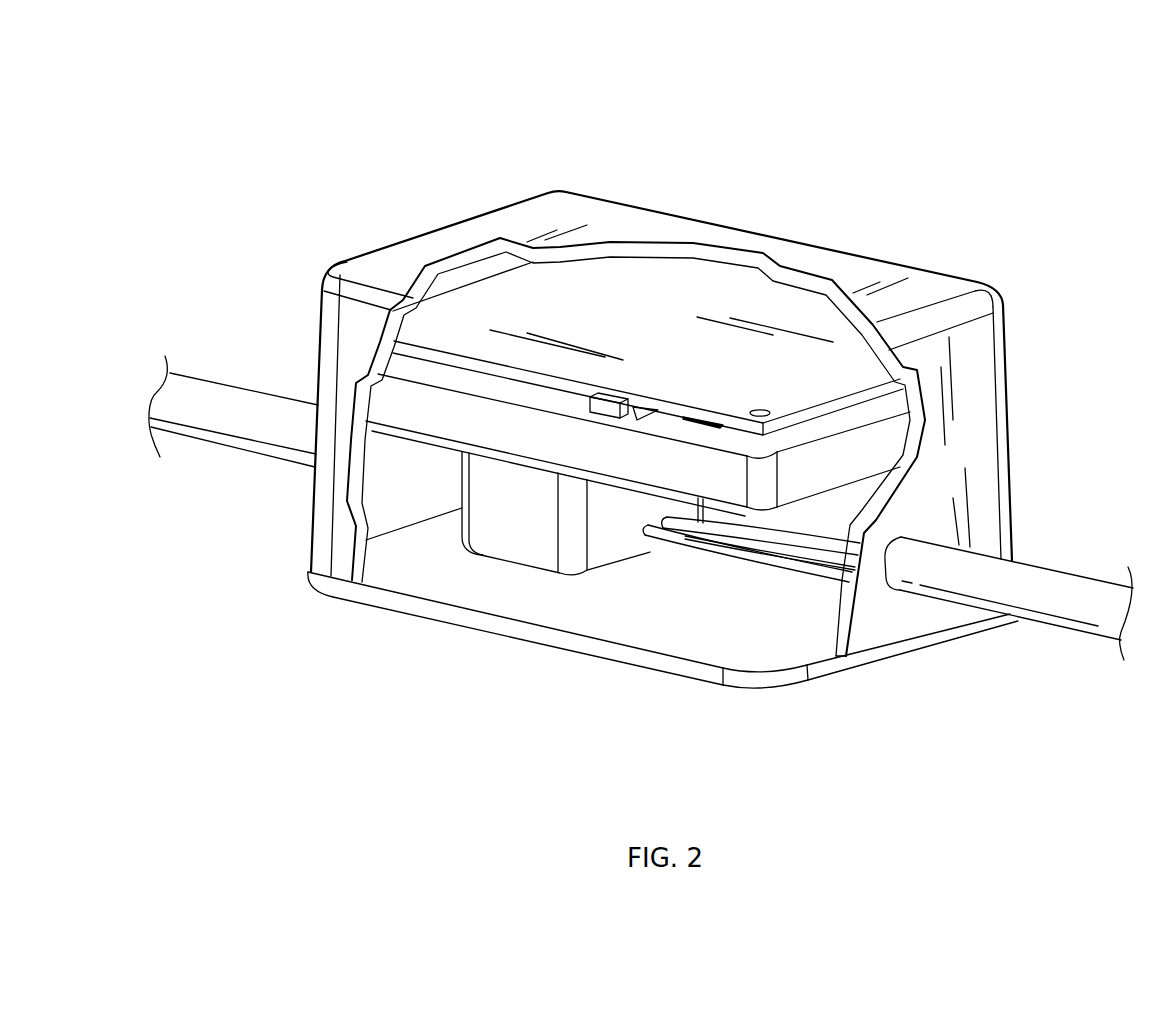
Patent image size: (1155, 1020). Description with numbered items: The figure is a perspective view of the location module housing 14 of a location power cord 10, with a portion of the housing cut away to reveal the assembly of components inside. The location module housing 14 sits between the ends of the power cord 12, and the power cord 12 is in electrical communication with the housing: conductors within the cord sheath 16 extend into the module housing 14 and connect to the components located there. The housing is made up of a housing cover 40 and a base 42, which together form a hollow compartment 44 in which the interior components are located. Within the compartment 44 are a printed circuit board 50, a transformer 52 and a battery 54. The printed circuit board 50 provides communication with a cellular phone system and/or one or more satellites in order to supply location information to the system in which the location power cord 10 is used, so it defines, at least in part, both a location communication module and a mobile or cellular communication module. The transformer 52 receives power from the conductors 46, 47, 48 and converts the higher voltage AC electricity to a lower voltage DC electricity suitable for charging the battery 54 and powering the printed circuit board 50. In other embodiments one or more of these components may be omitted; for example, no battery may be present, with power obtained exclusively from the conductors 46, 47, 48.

The location power cord 10 is at (957, 118).
The power cord 12 is at (203, 374).
The location module housing 14 is at (1041, 282).
The cord sheath 16 is at (258, 424).
The housing cover 40 is at (573, 191).
The base 42 is at (380, 598).
The hollow compartment 44 is at (627, 611).
The conductor 46 is at (720, 553).
The conductor 47 is at (763, 553).
The conductor 48 is at (803, 547).
The printed circuit board 50 is at (700, 280).
The transformer 52 is at (501, 531).
The battery 54 is at (661, 461).